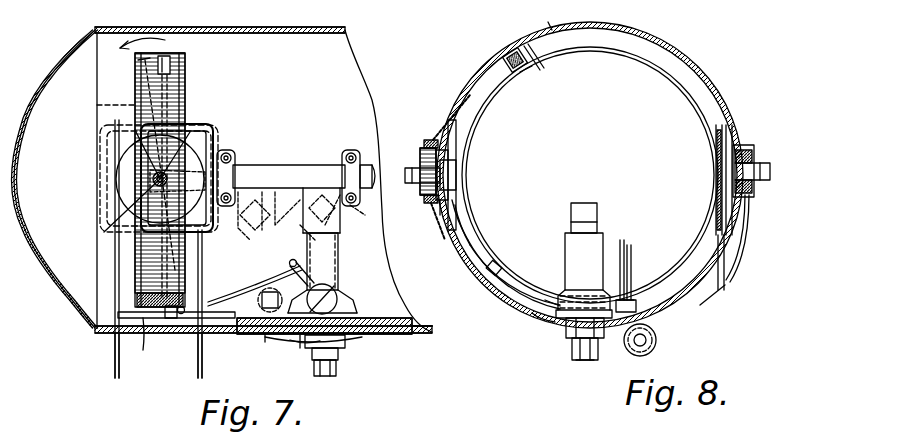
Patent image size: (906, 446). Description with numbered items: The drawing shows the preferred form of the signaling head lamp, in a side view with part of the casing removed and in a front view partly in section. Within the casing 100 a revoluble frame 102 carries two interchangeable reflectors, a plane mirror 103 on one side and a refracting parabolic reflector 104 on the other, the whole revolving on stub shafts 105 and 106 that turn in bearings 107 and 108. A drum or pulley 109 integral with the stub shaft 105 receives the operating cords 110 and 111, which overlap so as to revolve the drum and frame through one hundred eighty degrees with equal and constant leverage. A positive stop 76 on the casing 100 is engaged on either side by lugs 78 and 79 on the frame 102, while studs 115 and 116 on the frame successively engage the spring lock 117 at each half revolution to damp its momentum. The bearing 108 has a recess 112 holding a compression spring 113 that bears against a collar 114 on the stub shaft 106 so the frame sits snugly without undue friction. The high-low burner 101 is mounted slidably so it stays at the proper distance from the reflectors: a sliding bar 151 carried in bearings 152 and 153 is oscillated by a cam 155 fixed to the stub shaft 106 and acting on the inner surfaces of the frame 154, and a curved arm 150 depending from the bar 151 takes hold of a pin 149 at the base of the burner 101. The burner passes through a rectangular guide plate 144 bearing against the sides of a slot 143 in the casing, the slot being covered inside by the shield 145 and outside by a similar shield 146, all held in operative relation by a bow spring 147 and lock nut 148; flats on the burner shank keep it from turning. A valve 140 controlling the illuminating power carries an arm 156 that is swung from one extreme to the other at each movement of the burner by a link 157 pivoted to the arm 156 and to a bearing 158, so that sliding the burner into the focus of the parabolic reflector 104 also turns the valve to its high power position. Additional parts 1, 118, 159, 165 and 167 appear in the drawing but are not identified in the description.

In FIG. 7, the container 1 is at (288, 82).
In FIG. 8, the container 1 is at (628, 8).
In FIG. 8, the positive stop 76 is at (546, 28).
In FIG. 7, the lug 78 is at (187, 69).
In FIG. 8, the lug 78 is at (531, 59).
In FIG. 7, the lug 79 is at (138, 302).
In FIG. 8, the lug 79 is at (532, 313).
In FIG. 7, the casing 100 is at (258, 28).
In FIG. 8, the casing 100 is at (673, 57).
In FIG. 7, the burner 101 is at (331, 273).
In FIG. 8, the burner 101 is at (601, 246).
In FIG. 7, the revoluble frame 102 is at (180, 56).
In FIG. 8, the revoluble frame 102 is at (634, 44).
In FIG. 7, the plane mirror 103 is at (186, 106).
In FIG. 8, the plane mirror 103 is at (568, 165).
In FIG. 7, the refracting parabolic reflector 104 is at (97, 104).
In FIG. 8, the stub shaft 105 is at (748, 170).
In FIG. 7, the stub shaft 106 is at (205, 173).
In FIG. 8, the stub shaft 106 is at (402, 172).
In FIG. 8, the bearing 107 is at (733, 207).
In FIG. 8, the bearing 108 is at (422, 222).
In FIG. 7, the drum or pulley 109 is at (128, 158).
In FIG. 8, the drum or pulley 109 is at (720, 122).
In FIG. 7, the operating cord 110 is at (200, 357).
In FIG. 8, the operating cord 110 is at (724, 272).
In FIG. 7, the operating cord 111 is at (115, 353).
In FIG. 8, the operating cord 111 is at (715, 296).
In FIG. 8, the recess 112 is at (428, 140).
In FIG. 8, the compression spring 113 is at (412, 190).
In FIG. 8, the collar 114 is at (448, 170).
In FIG. 7, the stud 115 is at (142, 59).
In FIG. 8, the stud 115 is at (512, 70).
In FIG. 7, the stud 116 is at (150, 284).
In FIG. 8, the stud 116 is at (546, 298).
In FIG. 8, the spring lock 117 is at (508, 55).
In FIG. 7, the valve cap 118 is at (331, 233).
In FIG. 8, the valve cap 118 is at (596, 215).
In FIG. 7, the valve 140 is at (341, 293).
In FIG. 7, the slot 143 is at (266, 336).
In FIG. 7, the rectangular guide plate 144 is at (345, 343).
In FIG. 7, the shield 145 is at (384, 319).
In FIG. 7, the shield 146 is at (404, 337).
In FIG. 7, the bow spring 147 is at (314, 362).
In FIG. 7, the lock nut 148 is at (338, 356).
In FIG. 7, the pin 149 is at (286, 341).
In FIG. 8, the pin 149 is at (531, 311).
In FIG. 7, the curved arm 150 is at (336, 252).
In FIG. 8, the curved arm 150 is at (476, 237).
In FIG. 7, the sliding bar 151 is at (262, 177).
In FIG. 8, the sliding bar 151 is at (452, 184).
In FIG. 7, the bearing 152 is at (235, 168).
In FIG. 7, the bearing 153 is at (344, 160).
In FIG. 7, the frame 154 is at (214, 131).
In FIG. 8, the frame 154 is at (456, 130).
In FIG. 7, the cam 155 is at (160, 162).
In FIG. 7, the arm 156 is at (322, 284).
In FIG. 8, the arm 156 is at (625, 268).
In FIG. 7, the link 157 is at (216, 300).
In FIG. 8, the link 157 is at (632, 286).
In FIG. 7, the bearing 158 is at (172, 319).
In FIG. 8, the bearing 158 is at (637, 302).
In FIG. 7, the link 159 is at (143, 350).
In FIG. 8, the outlet 165 is at (599, 352).
In FIG. 8, the roller 167 is at (657, 335).